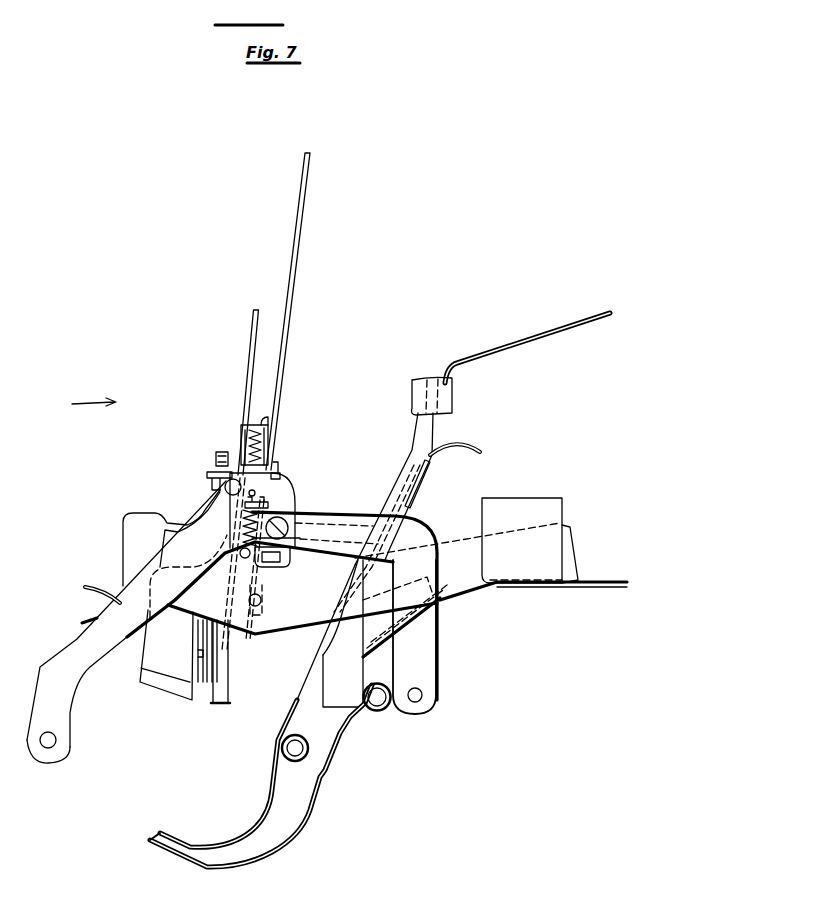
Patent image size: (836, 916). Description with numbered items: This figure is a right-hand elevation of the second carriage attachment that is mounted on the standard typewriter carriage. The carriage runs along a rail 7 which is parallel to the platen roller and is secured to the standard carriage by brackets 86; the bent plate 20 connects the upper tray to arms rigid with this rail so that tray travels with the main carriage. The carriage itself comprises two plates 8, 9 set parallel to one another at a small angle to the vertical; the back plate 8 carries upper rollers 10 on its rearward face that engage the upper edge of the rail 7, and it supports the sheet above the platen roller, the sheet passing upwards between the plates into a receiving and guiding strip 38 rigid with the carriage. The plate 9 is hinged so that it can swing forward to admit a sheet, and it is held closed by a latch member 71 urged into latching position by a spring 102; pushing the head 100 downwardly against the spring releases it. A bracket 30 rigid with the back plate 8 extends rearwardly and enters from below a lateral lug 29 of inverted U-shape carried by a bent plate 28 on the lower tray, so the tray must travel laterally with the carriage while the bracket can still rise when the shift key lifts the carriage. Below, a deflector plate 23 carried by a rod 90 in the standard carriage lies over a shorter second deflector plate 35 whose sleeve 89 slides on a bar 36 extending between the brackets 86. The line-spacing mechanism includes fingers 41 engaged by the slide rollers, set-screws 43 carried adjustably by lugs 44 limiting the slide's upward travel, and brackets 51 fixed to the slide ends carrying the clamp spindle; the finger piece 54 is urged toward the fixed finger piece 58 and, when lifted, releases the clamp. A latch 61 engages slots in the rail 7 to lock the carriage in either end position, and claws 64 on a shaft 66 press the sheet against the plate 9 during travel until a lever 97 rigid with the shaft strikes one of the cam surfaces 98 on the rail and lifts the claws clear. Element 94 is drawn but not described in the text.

The rail 7 is at (260, 504).
The back plate 8 is at (227, 676).
The plate 9 is at (229, 691).
The upper rollers 10 is at (278, 470).
The bent plate 20 is at (565, 326).
The deflector plate 23 is at (268, 812).
The bent plate 28 is at (590, 583).
The lateral lug 29 is at (527, 498).
The bracket 30 is at (455, 548).
The second deflector plate 35 is at (298, 838).
The bar 36 is at (378, 687).
The receiving and guiding strip 38 is at (308, 194).
The fingers 41 is at (255, 323).
The set-screws 43 is at (218, 460).
The lugs 44 is at (208, 474).
The brackets 51 is at (172, 663).
The finger piece 54 is at (77, 620).
The fixed finger piece 58 is at (90, 589).
The latch 61 is at (167, 537).
The claws 64 is at (254, 640).
The shaft 66 is at (272, 627).
The latch member 71 is at (270, 446).
The brackets 86 is at (42, 683).
The sleeve 89 is at (392, 692).
The rod 90 is at (308, 749).
The pin 94 is at (262, 600).
The lever 97 is at (262, 586).
The cam surfaces 98 is at (288, 565).
The head 100 is at (262, 422).
The spring 102 is at (244, 440).